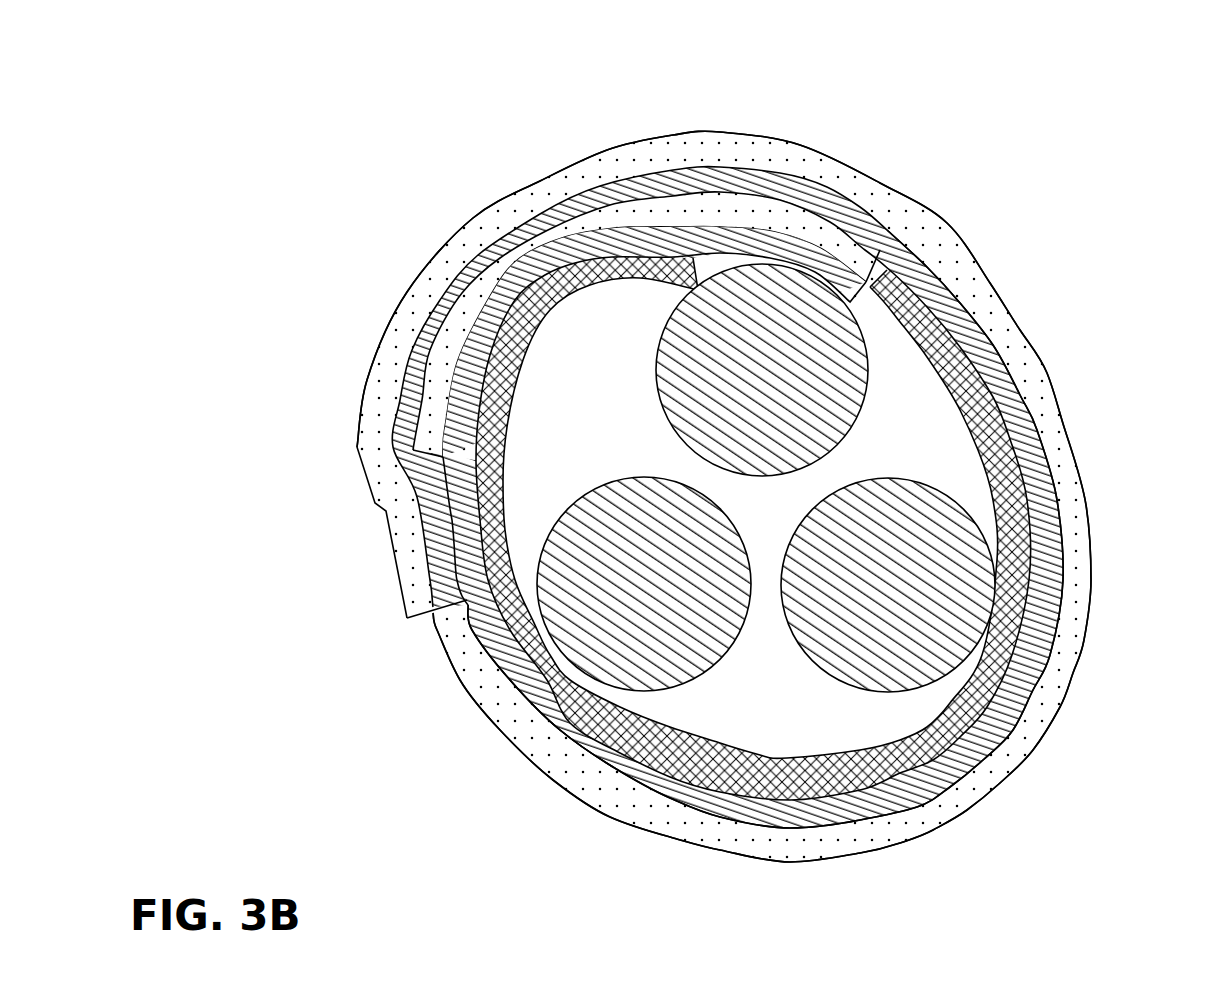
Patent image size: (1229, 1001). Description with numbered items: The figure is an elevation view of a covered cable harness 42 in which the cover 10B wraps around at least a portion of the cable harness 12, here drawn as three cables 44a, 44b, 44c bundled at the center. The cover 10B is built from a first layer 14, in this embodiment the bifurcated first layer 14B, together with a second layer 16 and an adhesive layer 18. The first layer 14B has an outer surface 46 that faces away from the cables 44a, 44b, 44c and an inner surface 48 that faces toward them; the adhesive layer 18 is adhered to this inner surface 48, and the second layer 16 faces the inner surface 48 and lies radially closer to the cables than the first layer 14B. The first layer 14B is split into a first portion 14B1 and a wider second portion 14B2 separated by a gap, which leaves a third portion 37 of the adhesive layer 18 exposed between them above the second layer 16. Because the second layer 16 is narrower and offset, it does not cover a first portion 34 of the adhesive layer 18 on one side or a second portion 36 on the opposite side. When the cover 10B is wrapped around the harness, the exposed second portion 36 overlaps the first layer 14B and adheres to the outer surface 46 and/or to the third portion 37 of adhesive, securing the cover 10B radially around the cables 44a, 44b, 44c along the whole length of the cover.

The cover 10B is at (1064, 392).
The cable harness 12 is at (744, 566).
The first layer 14 is at (1073, 557).
The first layer 14B is at (826, 234).
The first portion 14B1 is at (740, 210).
The second portion 14B2 is at (480, 668).
The second layer 16 is at (510, 363).
The adhesive layer 18 is at (553, 728).
The first portion of the adhesive layer 34 is at (813, 287).
The second portion of the adhesive layer 36 is at (456, 519).
The third portion of the adhesive layer 37 is at (428, 505).
The covered cable harness 42 is at (1070, 128).
The cable 44a is at (1060, 833).
The cable 44b is at (1060, 833).
The cable 44c is at (905, 645).
The outer surface 46 is at (905, 202).
The inner surface 48 is at (1025, 430).